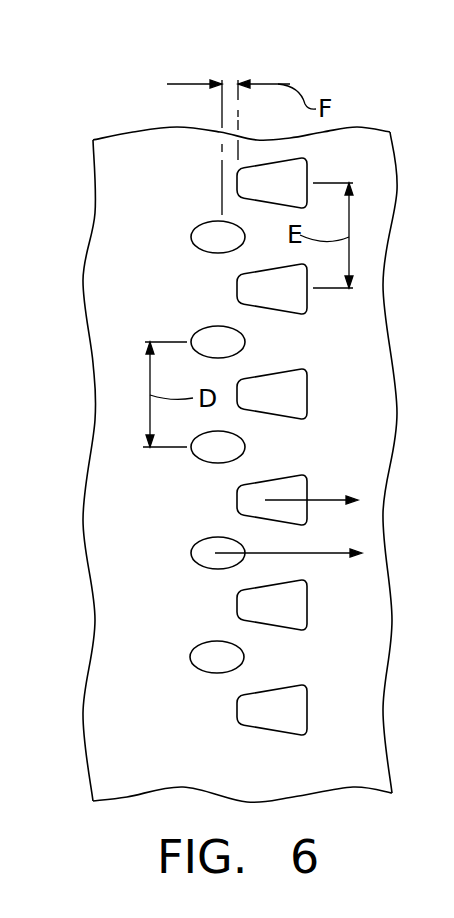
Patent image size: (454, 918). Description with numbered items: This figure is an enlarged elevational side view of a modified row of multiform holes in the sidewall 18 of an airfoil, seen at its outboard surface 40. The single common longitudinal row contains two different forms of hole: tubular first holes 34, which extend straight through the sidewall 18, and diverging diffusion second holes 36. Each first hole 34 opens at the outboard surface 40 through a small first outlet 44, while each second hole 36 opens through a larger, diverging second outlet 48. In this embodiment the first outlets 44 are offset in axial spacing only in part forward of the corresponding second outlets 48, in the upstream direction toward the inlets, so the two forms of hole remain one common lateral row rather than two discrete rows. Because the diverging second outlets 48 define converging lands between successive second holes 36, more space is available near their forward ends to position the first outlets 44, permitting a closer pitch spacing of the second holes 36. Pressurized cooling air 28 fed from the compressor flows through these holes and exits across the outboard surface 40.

The sidewall 18 is at (133, 132).
The outboard surface 40 is at (160, 207).
The first holes 34 is at (188, 254).
The second holes 36 is at (224, 305).
The second outlet 48 is at (287, 372).
The first outlet 44 is at (230, 434).
The cooling air 28 is at (302, 552).